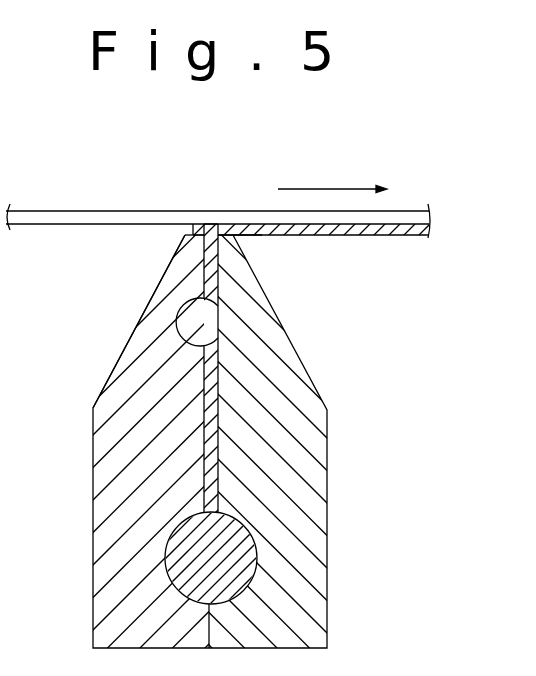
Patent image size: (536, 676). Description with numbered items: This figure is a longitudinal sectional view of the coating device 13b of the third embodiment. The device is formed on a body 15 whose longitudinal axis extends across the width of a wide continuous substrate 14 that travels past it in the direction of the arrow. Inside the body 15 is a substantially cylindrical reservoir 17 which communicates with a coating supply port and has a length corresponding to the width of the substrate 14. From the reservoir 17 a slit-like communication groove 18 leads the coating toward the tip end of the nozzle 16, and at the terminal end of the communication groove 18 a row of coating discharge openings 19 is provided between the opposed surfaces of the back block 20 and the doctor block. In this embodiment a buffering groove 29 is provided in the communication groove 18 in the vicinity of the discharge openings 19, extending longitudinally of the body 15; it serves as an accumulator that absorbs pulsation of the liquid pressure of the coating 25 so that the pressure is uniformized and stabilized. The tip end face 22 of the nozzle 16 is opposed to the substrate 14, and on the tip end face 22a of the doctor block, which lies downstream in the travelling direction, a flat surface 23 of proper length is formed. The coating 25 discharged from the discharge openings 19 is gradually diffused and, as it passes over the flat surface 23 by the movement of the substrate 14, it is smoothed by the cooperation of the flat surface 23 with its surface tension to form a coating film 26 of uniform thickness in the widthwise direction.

The substrate 14 is at (86, 206).
The tip end face of the nozzle 22 is at (194, 224).
The tip end face of the doctor block 22a is at (223, 224).
The flat surface 23 is at (241, 225).
The nozzle 16 is at (155, 273).
The buffering groove 29 is at (178, 324).
The coating discharge openings 19 is at (219, 278).
The coating film 26 is at (409, 237).
The coating device 13b is at (341, 426).
The back block 20 is at (100, 468).
The communication groove 18 is at (210, 470).
The body 15 is at (342, 521).
The reservoir 17 is at (252, 563).
The coating 25 is at (180, 570).